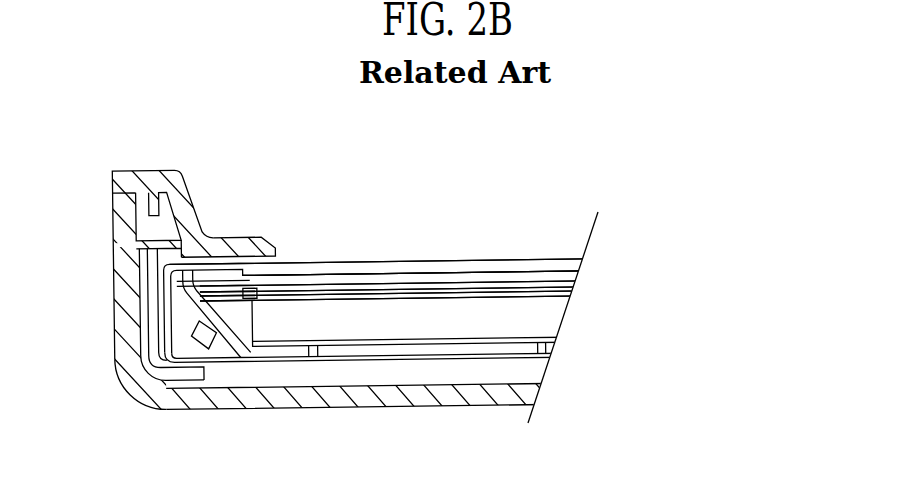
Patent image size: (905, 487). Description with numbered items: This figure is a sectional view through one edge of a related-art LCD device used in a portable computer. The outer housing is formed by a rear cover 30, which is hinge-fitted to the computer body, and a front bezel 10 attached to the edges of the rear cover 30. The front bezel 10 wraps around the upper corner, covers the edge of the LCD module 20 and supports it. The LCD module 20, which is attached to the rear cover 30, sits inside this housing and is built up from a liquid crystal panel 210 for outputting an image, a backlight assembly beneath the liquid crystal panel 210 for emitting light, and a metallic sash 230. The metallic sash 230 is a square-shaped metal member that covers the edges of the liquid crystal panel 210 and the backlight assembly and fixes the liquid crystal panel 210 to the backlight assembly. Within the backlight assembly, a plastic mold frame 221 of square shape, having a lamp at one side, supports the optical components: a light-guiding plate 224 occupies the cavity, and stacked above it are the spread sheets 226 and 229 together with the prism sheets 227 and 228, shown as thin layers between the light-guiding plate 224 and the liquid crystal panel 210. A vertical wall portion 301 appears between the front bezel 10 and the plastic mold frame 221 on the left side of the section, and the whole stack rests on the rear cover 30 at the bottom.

The front bezel 10 is at (178, 185).
The LCD module 20 is at (367, 255).
The rear cover 30 is at (285, 402).
The liquid crystal panel 210 is at (492, 278).
The plastic mold frame 221 is at (235, 313).
The light-guiding plate 224 is at (553, 315).
The spread sheet 226 is at (572, 286).
The prism sheet 227 is at (572, 286).
The prism sheet 228 is at (572, 286).
The spread sheet 229 is at (572, 286).
The metallic sash 230 is at (232, 240).
The support plate 301 is at (157, 329).